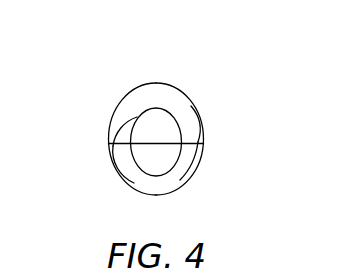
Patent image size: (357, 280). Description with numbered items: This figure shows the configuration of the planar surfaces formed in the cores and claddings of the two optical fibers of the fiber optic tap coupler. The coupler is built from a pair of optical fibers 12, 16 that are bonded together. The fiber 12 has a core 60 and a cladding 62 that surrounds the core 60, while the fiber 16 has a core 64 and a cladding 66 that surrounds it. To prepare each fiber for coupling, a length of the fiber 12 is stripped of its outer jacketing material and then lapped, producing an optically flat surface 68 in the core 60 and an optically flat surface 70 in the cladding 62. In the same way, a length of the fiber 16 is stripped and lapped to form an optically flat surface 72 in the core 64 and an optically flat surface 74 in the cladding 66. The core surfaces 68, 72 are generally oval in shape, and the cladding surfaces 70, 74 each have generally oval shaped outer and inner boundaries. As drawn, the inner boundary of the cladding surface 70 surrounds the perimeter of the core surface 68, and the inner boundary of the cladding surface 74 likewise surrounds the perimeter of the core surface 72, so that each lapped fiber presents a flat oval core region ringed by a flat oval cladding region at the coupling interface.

The optical fiber 12 is at (163, 58).
The optical fiber 16 is at (235, 150).
The core 60 is at (152, 108).
The cladding 62 is at (178, 88).
The core 64 is at (134, 183).
The cladding 66 is at (180, 191).
The optically flat surface 68 is at (194, 167).
The optically flat surface 70 is at (115, 160).
The optically flat surface 72 is at (137, 117).
The optically flat surface 74 is at (197, 118).